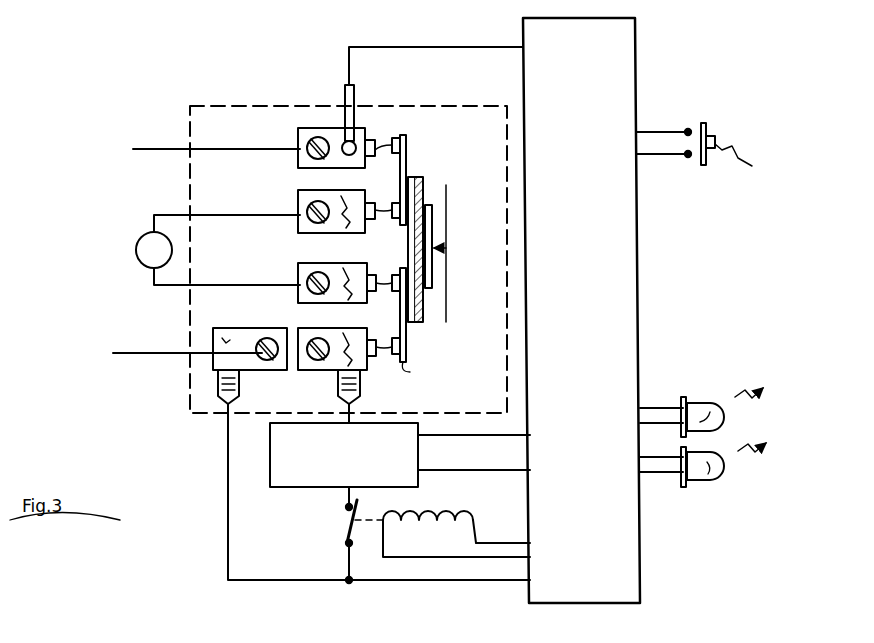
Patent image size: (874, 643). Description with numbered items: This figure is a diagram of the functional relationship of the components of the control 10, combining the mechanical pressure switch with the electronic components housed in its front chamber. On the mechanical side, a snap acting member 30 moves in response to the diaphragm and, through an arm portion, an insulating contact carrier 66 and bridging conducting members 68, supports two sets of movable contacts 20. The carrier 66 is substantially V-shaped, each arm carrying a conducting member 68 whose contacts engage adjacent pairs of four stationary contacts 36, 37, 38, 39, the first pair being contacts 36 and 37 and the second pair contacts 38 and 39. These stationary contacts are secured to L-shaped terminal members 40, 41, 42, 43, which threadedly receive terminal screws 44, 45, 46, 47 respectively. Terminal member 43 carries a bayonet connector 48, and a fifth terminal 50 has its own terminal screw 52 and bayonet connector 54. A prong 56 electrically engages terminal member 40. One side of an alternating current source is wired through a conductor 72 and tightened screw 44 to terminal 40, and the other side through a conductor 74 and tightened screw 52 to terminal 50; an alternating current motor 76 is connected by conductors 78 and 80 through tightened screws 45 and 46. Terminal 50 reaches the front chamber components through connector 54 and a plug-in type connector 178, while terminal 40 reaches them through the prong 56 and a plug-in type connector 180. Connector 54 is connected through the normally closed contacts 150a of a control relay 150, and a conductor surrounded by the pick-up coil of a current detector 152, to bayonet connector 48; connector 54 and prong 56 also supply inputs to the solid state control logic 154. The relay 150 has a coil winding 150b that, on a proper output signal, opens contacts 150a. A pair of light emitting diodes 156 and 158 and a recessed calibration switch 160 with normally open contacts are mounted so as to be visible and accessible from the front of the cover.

The control 10 is at (183, 429).
The movable contacts 20 is at (403, 135).
The snap acting member 30 is at (432, 205).
The stationary contact 36 is at (392, 145).
The stationary contact 37 is at (378, 205).
The stationary contact 38 is at (376, 272).
The stationary contact 39 is at (404, 364).
The L-shaped terminal member 40 is at (298, 136).
The L-shaped terminal member 41 is at (298, 228).
The L-shaped terminal member 42 is at (300, 264).
The L-shaped terminal member 43 is at (380, 338).
The terminal screw 44 is at (298, 150).
The terminal screw 45 is at (300, 210).
The terminal screw 46 is at (300, 283).
The terminal screw 47 is at (312, 339).
The bayonet connector 48 is at (338, 388).
The fifth terminal 50 is at (226, 341).
The terminal screw 52 is at (262, 339).
The bayonet connector 54 is at (218, 386).
The prong 56 is at (345, 92).
The insulating contact carrier 66 is at (419, 178).
The conducting member 68 is at (401, 153).
The conductor 72 is at (138, 149).
The conductor 74 is at (160, 355).
The alternating current motor 76 is at (136, 250).
The conductor 78 is at (160, 215).
The conductor 80 is at (156, 288).
The control relay 150 is at (407, 532).
The normally closed contacts 150a is at (345, 522).
The coil winding 150b is at (430, 518).
The current detector 152 is at (290, 487).
The control logic 154 is at (637, 244).
The light emitting diode 156 is at (697, 401).
The light emitting diode 158 is at (700, 482).
The recessed calibration switch 160 is at (709, 130).
The plug-in type connector 178 is at (228, 493).
The plug-in type connector 180 is at (464, 47).